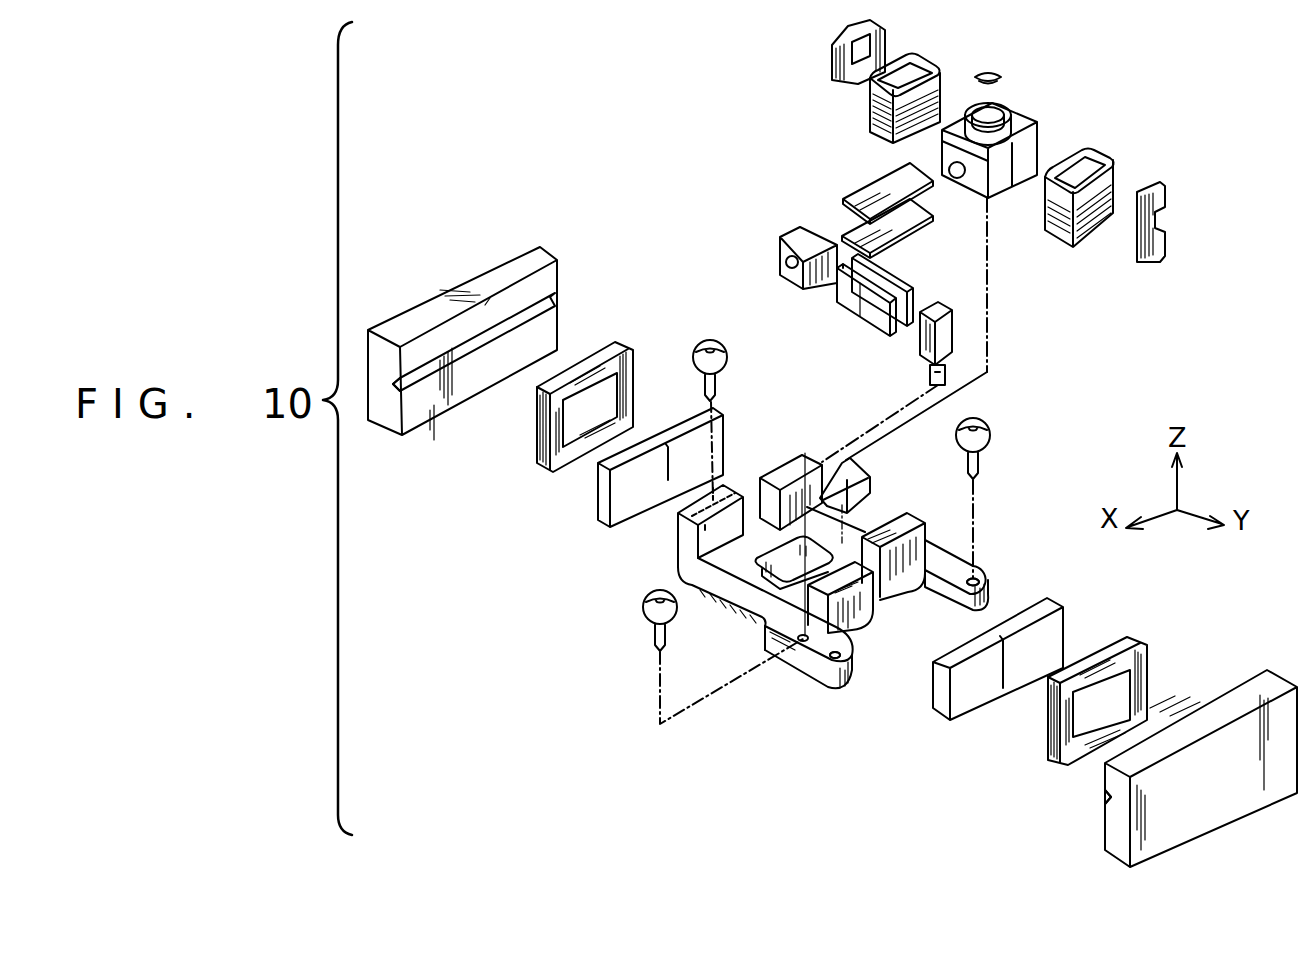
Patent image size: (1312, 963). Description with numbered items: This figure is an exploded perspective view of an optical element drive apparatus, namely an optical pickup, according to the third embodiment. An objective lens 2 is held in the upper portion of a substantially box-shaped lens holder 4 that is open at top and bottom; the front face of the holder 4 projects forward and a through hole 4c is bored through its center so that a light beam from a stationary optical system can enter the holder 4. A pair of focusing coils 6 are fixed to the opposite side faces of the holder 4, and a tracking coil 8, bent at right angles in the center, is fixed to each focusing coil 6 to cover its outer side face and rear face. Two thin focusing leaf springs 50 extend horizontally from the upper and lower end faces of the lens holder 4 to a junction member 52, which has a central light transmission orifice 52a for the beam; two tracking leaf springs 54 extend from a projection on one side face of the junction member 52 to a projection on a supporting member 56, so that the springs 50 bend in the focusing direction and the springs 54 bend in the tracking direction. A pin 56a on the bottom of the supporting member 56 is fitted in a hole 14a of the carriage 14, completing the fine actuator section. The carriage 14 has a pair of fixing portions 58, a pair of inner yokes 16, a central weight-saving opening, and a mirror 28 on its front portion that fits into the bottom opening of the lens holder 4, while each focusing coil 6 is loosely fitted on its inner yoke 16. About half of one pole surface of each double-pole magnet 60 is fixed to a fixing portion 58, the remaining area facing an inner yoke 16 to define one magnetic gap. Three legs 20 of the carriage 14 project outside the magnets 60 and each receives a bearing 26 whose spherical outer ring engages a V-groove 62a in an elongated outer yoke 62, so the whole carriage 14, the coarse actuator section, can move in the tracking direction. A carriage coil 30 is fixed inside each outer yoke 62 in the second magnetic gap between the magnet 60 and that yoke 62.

The objective lens 2 is at (988, 70).
The lens holder 4 is at (1035, 121).
The through hole 4c is at (949, 170).
The focusing coil 6 is at (870, 106).
The tracking coil 8 is at (832, 56).
The carriage 14 is at (791, 693).
The hole 14a is at (765, 646).
The inner yoke 16 is at (793, 462).
The leg 20 is at (722, 492).
The bearing 26 is at (704, 343).
The mirror 28 is at (856, 479).
The carriage coil 30 is at (537, 460).
The focusing leaf spring 50 is at (850, 238).
The junction member 52 is at (780, 254).
The light transmission orifice 52a is at (787, 268).
The tracking leaf spring 54 is at (893, 294).
The supporting member 56 is at (918, 352).
The pin 56a is at (930, 378).
The fixing portion 58 is at (678, 552).
The double-pole magnet 60 is at (598, 518).
The outer yoke 62 is at (422, 306).
The V-groove 62a is at (393, 386).